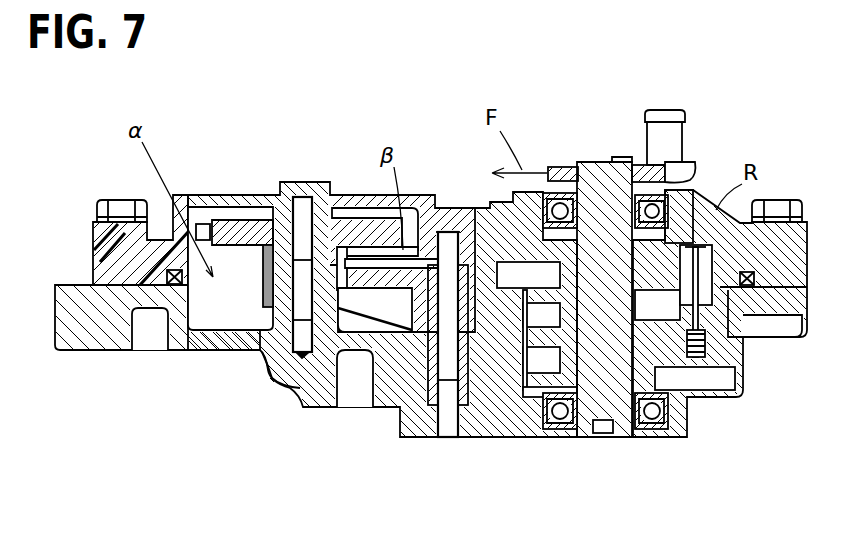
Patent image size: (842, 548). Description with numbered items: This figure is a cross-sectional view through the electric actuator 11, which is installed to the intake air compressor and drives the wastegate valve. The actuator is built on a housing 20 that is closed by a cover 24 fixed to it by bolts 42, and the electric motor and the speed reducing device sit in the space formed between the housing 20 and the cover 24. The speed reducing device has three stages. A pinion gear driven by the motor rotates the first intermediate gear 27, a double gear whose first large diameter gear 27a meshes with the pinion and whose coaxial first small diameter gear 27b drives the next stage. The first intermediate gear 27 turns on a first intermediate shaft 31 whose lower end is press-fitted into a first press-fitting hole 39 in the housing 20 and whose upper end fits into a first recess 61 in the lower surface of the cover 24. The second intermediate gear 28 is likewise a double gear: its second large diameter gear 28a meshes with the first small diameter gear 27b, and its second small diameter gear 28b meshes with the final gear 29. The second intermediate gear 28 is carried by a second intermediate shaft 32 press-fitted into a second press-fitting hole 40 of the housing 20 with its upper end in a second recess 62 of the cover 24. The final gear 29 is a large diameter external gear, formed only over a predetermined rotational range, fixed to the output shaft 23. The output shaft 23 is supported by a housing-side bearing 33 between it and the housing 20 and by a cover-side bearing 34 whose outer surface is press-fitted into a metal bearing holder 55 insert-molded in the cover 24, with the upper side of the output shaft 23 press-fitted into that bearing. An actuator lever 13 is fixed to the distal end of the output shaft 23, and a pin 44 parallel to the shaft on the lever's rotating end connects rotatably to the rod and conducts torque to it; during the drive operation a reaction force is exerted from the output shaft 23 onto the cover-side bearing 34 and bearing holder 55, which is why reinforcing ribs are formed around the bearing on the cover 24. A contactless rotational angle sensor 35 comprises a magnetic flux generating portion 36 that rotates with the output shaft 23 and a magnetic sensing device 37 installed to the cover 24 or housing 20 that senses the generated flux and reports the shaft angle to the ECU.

The electric actuator 11 is at (789, 115).
The actuator lever 13 is at (645, 172).
The housing 20 is at (88, 330).
The output shaft 23 is at (607, 185).
The cover 24 is at (100, 230).
The first intermediate gear 27 is at (264, 134).
The first large diameter gear 27a is at (201, 225).
The first small diameter gear 27b is at (268, 258).
The second intermediate gear 28 is at (378, 470).
The second large diameter gear 28a is at (340, 313).
The second small diameter gear 28b is at (405, 352).
The final gear 29 is at (500, 362).
The first intermediate shaft 31 is at (302, 313).
The second intermediate shaft 32 is at (440, 385).
The housing-side bearing 33 is at (559, 419).
The cover-side bearing 34 is at (556, 211).
The rotational angle sensor 35 is at (740, 334).
The magnetic flux generating portion 36 is at (702, 347).
The magnetic sensing device 37 is at (700, 353).
The first press-fitting hole 39 is at (282, 362).
The second press-fitting hole 40 is at (450, 417).
The bolt 42 is at (118, 198).
The pin 44 is at (668, 130).
The bearing holder 55 is at (678, 203).
The first recess 61 is at (302, 197).
The second recess 62 is at (447, 232).